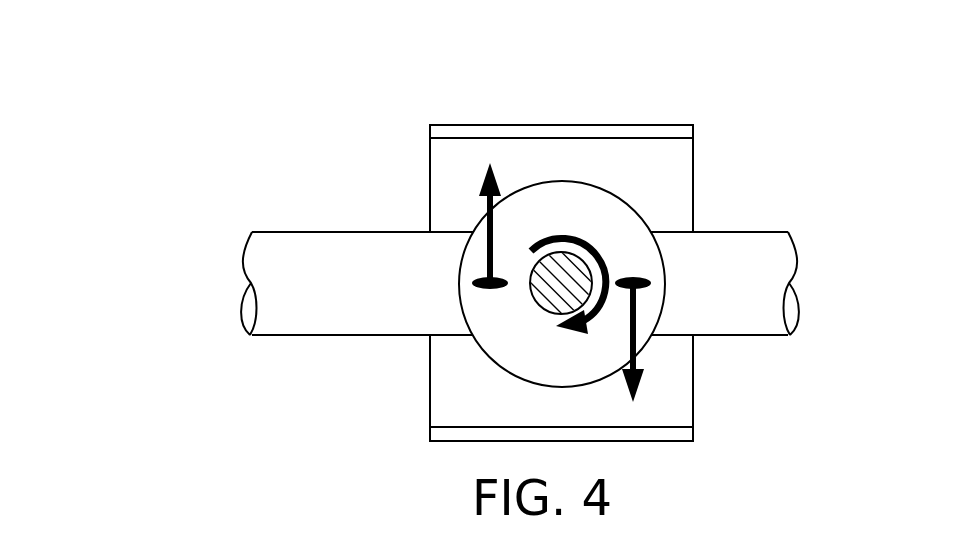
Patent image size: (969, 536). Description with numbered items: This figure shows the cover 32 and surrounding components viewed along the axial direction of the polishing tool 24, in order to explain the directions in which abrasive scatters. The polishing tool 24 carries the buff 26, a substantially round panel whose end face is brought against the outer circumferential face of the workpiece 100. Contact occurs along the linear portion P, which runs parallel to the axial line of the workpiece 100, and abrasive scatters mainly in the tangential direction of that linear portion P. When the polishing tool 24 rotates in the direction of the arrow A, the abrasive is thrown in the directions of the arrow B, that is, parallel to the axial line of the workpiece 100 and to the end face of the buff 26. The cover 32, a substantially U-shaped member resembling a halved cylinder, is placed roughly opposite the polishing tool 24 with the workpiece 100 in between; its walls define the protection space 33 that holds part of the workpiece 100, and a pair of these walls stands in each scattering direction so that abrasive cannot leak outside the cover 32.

The polishing tool 24 is at (562, 208).
The buff 26 is at (563, 196).
The cover 32 is at (662, 125).
The protection space 33 is at (662, 190).
The workpiece 100 is at (749, 231).
The linear portion P is at (480, 288).
The arrow A is at (568, 292).
The arrow B is at (561, 287).